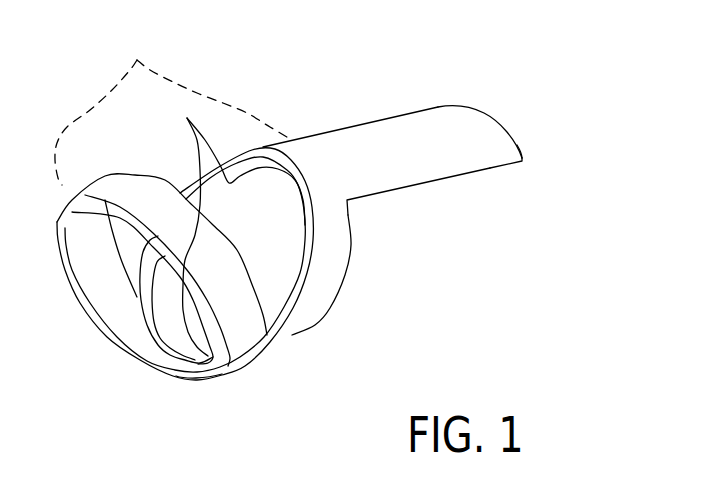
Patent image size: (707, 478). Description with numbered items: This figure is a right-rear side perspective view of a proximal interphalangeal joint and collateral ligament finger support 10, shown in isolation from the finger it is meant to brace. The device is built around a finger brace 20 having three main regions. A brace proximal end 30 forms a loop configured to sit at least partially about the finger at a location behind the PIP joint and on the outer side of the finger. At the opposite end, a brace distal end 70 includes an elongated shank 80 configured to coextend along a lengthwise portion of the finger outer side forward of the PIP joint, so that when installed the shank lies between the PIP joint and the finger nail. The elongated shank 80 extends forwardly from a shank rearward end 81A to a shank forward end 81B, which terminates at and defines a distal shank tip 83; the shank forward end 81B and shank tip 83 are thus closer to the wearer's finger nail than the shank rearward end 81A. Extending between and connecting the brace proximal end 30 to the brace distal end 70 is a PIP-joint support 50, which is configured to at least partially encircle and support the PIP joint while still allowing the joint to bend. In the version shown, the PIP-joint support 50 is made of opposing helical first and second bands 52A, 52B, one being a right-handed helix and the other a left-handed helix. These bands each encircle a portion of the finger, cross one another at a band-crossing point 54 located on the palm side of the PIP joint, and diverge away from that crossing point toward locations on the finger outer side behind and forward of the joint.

The proximal interphalangeal joint and collateral ligament finger support 10 is at (421, 305).
The finger brace 20 is at (322, 256).
The brace proximal end 30 is at (112, 182).
The PIP-joint support 50 is at (137, 62).
The helical first band 52A is at (185, 119).
The helical second band 52B is at (128, 336).
The band-crossing point 54 is at (197, 378).
The brace distal end 70 is at (340, 147).
The elongated shank 80 is at (483, 128).
The shank rearward end 81A is at (357, 185).
The shank forward end 81B is at (496, 155).
The distal shank tip 83 is at (513, 134).